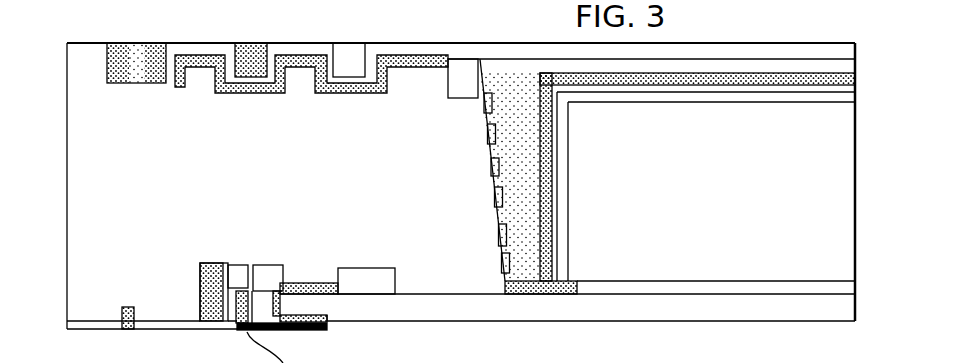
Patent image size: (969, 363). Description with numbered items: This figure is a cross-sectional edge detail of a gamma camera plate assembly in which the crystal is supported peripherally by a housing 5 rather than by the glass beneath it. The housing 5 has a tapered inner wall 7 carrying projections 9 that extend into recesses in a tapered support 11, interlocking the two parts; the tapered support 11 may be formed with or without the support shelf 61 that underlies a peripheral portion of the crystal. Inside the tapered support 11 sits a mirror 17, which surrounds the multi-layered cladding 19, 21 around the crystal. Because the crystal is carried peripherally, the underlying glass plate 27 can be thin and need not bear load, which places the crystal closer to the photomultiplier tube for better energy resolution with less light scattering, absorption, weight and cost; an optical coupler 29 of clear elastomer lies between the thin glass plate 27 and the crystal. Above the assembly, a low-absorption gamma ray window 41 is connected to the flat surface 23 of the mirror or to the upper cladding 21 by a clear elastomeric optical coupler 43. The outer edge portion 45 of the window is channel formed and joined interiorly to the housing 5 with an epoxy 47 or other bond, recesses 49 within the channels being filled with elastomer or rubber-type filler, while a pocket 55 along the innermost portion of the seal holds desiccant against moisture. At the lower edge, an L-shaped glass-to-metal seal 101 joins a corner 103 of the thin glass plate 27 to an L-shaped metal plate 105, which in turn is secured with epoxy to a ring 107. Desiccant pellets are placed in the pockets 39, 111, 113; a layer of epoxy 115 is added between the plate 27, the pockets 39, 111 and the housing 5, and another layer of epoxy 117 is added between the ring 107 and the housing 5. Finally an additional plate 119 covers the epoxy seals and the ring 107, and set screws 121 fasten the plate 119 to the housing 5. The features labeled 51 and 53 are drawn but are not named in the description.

The housing 5 is at (66, 207).
The tapered inner wall 7 is at (500, 213).
The projections 9 is at (497, 163).
The tapered support 11 is at (517, 115).
The mirror 17 is at (551, 135).
The cladding 19 is at (563, 157).
The upper cladding 21 is at (553, 215).
The flat surface 23 is at (758, 84).
The thin glass plate 27 is at (725, 323).
The optical coupler 29 is at (775, 295).
The desiccant pocket 39 is at (383, 268).
The gamma ray window 41 is at (792, 45).
The optical coupler 43 is at (747, 60).
The outer edge portion 45 is at (244, 43).
The epoxy 47 is at (344, 97).
The recesses 49 is at (138, 43).
The insulating insert 51 is at (260, 44).
The recess 53 is at (352, 47).
The pocket 55 is at (447, 78).
The peripheral support ring 61 is at (537, 295).
The L-shaped glass-to-metal seal 101 is at (332, 322).
The corner 103 is at (308, 315).
The L-shaped metal plate 105 is at (283, 333).
The ring 107 is at (232, 323).
The pocket 111 is at (272, 265).
The pocket 113 is at (240, 263).
The epoxy layer 115 is at (308, 285).
The epoxy layer 117 is at (212, 322).
The additional plate 119 is at (170, 332).
The set screws 121 is at (122, 315).